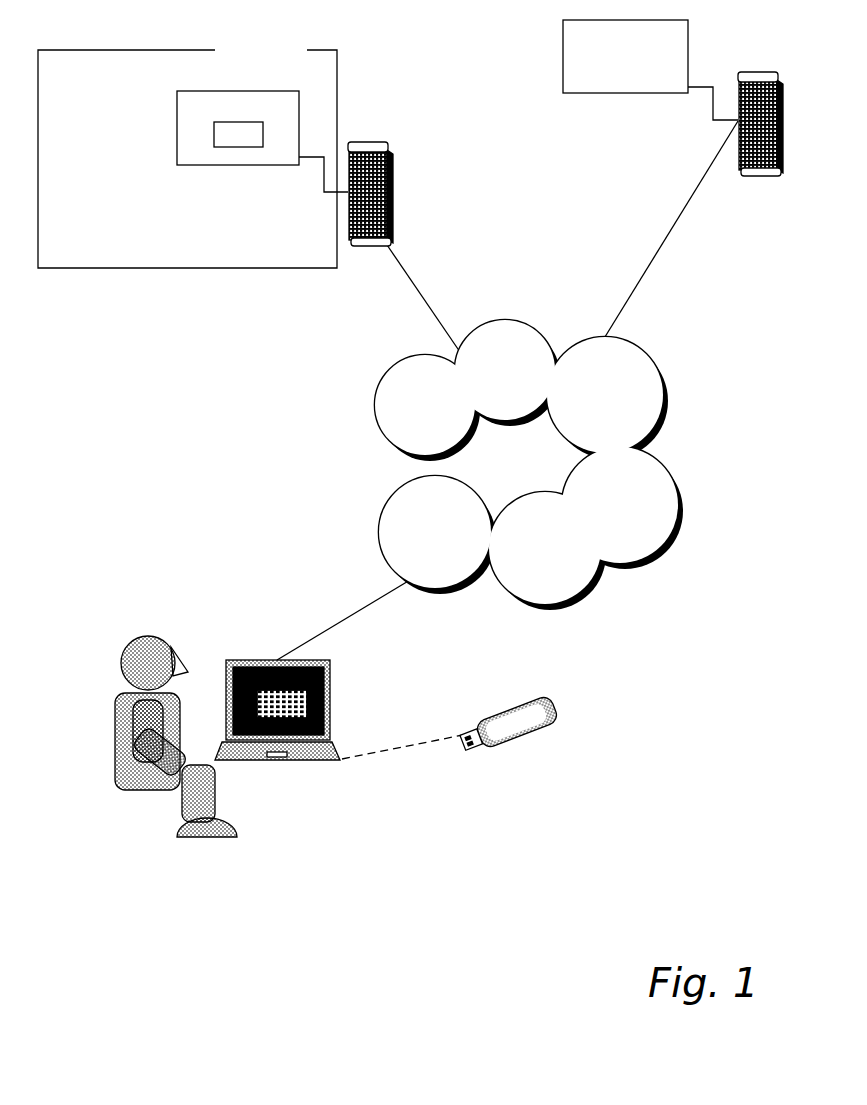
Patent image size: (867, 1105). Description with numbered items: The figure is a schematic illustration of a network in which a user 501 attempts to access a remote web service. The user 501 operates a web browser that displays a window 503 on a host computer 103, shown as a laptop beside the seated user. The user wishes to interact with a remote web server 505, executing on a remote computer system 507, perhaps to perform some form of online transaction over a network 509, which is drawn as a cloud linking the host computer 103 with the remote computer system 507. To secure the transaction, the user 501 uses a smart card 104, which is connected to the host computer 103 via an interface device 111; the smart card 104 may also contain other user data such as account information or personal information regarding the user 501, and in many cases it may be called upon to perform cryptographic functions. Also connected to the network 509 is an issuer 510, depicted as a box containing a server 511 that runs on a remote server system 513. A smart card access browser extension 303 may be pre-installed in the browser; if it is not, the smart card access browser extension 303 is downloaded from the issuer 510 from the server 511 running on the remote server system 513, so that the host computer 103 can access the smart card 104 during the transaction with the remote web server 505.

The issuer 510 is at (316, 262).
The server 511 is at (176, 134).
The smart card access browser extension 303 is at (228, 148).
The remote server system 513 is at (393, 198).
The remote web server 505 is at (563, 67).
The remote computer system 507 is at (783, 123).
The network 509 is at (375, 415).
The user 501 is at (117, 733).
The window 503 is at (322, 692).
The host computer 103 is at (316, 762).
The smart card 104 is at (525, 735).
The interface device 111 is at (475, 752).